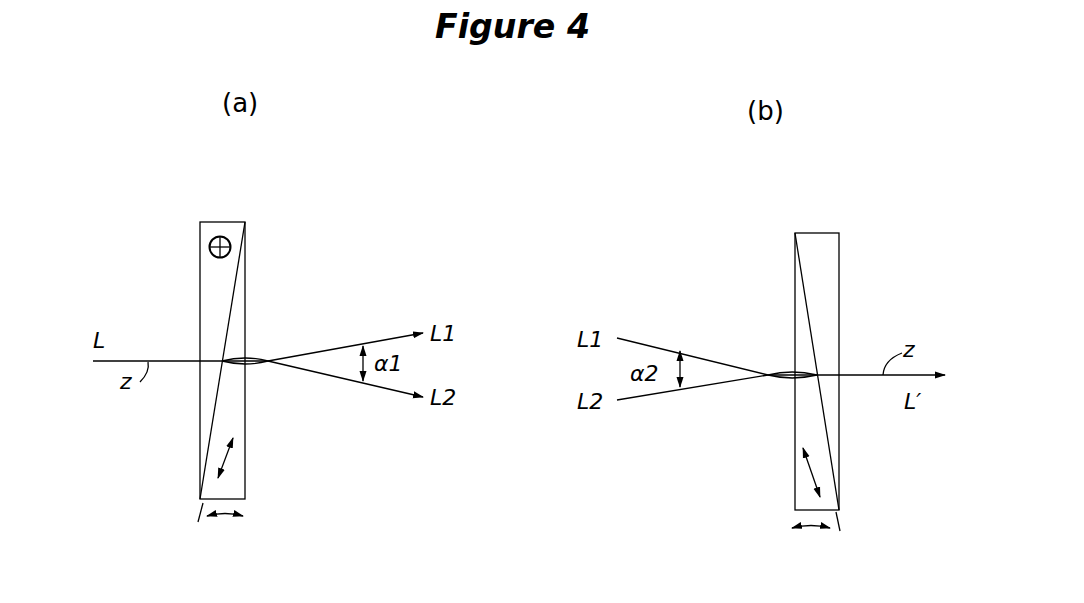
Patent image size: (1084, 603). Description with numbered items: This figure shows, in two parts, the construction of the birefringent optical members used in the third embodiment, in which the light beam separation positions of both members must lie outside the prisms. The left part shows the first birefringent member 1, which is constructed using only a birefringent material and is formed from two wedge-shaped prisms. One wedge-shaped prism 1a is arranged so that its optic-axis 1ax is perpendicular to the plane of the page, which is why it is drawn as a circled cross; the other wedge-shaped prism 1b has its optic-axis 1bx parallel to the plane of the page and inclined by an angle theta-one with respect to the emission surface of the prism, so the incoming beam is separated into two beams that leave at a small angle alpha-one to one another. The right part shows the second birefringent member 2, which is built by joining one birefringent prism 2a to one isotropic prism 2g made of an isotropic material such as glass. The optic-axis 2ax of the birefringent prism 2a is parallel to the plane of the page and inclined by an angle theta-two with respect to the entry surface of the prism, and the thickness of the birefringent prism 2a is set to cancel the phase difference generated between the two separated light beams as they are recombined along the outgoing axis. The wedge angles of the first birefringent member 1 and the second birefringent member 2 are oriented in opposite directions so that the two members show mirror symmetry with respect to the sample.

The first birefringent member 1 is at (187, 202).
The wedge-shaped prism 1a is at (208, 290).
The optic-axis 1ax is at (209, 241).
The wedge-shaped prism 1b is at (238, 408).
The optic-axis 1bx is at (237, 463).
The second birefringent member 2 is at (782, 215).
The birefringent prism 2a is at (800, 422).
The optic-axis 2ax is at (800, 472).
The isotropic prism 2g is at (830, 241).